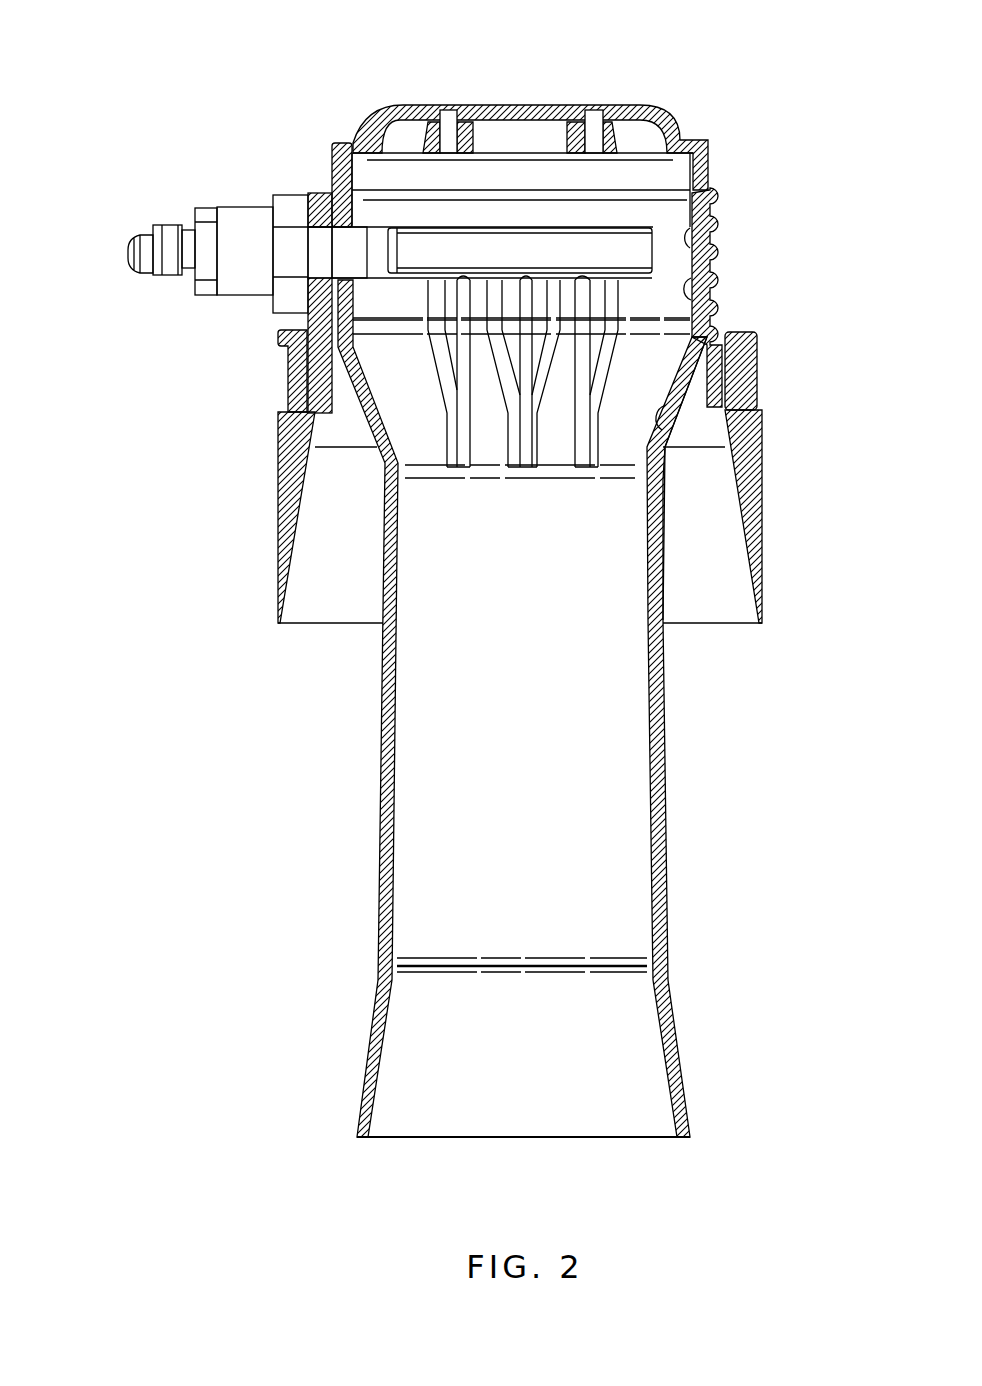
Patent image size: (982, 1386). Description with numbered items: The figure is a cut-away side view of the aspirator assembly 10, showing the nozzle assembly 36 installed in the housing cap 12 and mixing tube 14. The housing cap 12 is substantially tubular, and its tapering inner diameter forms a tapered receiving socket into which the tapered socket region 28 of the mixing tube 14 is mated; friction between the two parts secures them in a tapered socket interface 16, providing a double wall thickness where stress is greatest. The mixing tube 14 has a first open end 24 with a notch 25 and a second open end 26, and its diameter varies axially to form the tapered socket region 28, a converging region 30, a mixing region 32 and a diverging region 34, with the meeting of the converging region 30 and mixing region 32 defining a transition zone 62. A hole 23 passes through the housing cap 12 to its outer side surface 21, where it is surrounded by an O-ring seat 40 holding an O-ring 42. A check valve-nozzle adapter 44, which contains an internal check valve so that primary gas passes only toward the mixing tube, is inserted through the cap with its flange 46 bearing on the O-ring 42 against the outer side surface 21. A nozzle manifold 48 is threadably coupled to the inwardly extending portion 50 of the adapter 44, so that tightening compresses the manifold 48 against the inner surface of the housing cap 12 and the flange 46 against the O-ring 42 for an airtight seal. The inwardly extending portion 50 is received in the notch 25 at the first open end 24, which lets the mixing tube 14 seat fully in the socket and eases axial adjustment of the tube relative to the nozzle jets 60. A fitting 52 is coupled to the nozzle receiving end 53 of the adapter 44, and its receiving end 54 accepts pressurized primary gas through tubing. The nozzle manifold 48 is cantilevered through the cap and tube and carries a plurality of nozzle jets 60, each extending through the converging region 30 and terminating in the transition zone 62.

The aspirator assembly 10 is at (627, 78).
The housing cap 12 is at (675, 128).
The mixing tube 14 is at (665, 783).
The tapered socket interface 16 is at (720, 297).
The outer side surface 21 is at (303, 318).
The hole 23 is at (270, 250).
The first open end 24 is at (642, 210).
The notch 25 is at (325, 266).
The second open end 26 is at (585, 1127).
The tapered socket region 28 is at (723, 247).
The converging region 30 is at (672, 437).
The mixing region 32 is at (628, 687).
The diverging region 34 is at (647, 1062).
The nozzle assembly 36 is at (180, 213).
The O-ring seat 40 is at (323, 197).
The O-ring 42 is at (300, 210).
The check valve-nozzle adapter 44 is at (245, 280).
The flange 46 is at (285, 298).
The nozzle manifold 48 is at (535, 260).
The inwardly extending portion 50 is at (378, 157).
The fitting 52 is at (148, 214).
The nozzle receiving end 53 is at (258, 215).
The receiving end 54 is at (128, 247).
The nozzle jets 60 is at (463, 447).
The transition zone 62 is at (447, 478).